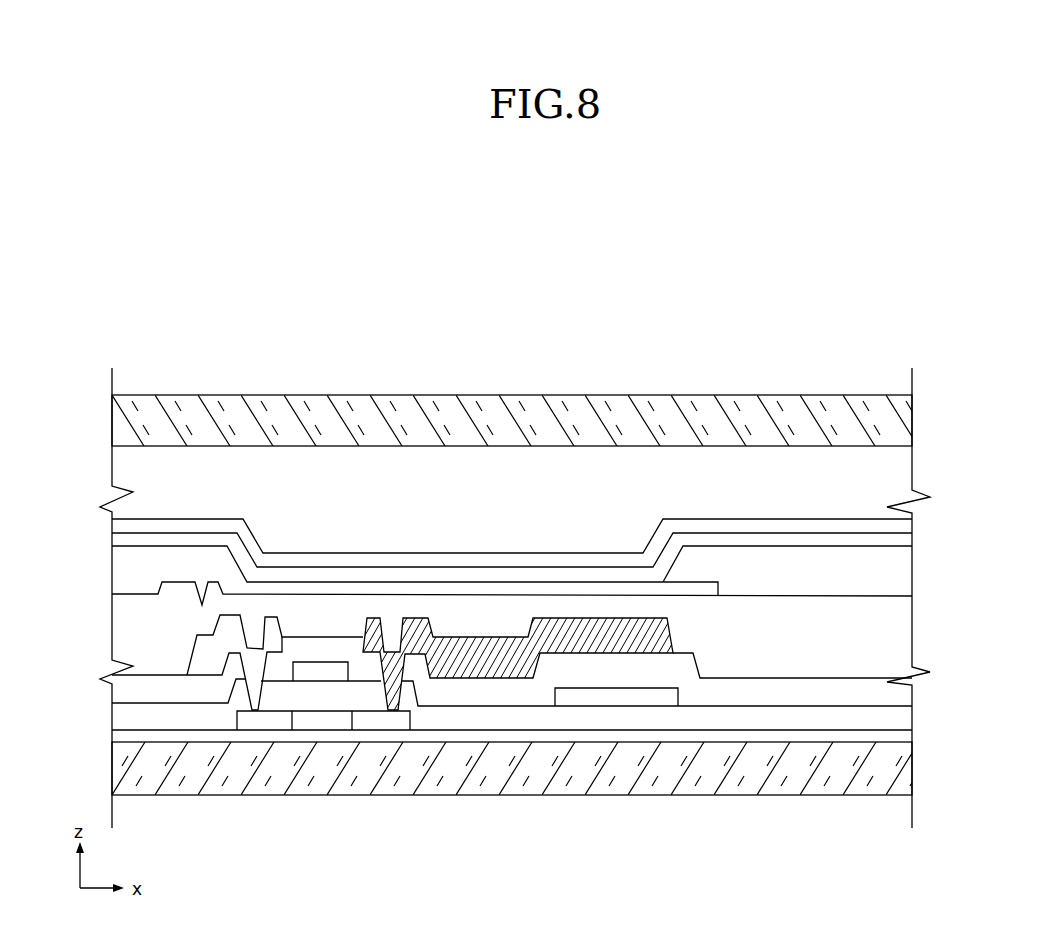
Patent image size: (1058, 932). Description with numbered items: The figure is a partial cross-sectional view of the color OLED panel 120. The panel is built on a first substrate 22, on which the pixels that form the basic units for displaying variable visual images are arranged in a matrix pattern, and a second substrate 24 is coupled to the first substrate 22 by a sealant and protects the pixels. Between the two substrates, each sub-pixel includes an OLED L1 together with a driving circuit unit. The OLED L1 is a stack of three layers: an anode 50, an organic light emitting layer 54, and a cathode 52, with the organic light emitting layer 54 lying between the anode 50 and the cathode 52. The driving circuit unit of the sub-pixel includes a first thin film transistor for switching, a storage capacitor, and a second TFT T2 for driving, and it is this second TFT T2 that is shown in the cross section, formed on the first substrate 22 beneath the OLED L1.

The first substrate 22 is at (547, 788).
The second substrate 24 is at (605, 405).
The anode 50 is at (327, 590).
The cathode 52 is at (402, 560).
The organic light emitting layer 54 is at (480, 576).
The OLED L1 is at (497, 333).
The color OLED panel 120 is at (856, 352).
The second TFT T2 is at (160, 647).